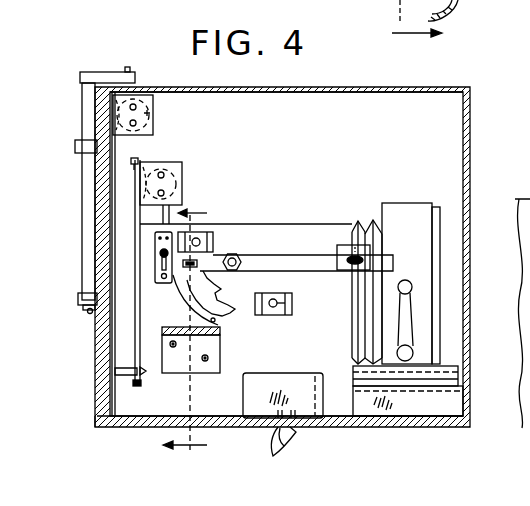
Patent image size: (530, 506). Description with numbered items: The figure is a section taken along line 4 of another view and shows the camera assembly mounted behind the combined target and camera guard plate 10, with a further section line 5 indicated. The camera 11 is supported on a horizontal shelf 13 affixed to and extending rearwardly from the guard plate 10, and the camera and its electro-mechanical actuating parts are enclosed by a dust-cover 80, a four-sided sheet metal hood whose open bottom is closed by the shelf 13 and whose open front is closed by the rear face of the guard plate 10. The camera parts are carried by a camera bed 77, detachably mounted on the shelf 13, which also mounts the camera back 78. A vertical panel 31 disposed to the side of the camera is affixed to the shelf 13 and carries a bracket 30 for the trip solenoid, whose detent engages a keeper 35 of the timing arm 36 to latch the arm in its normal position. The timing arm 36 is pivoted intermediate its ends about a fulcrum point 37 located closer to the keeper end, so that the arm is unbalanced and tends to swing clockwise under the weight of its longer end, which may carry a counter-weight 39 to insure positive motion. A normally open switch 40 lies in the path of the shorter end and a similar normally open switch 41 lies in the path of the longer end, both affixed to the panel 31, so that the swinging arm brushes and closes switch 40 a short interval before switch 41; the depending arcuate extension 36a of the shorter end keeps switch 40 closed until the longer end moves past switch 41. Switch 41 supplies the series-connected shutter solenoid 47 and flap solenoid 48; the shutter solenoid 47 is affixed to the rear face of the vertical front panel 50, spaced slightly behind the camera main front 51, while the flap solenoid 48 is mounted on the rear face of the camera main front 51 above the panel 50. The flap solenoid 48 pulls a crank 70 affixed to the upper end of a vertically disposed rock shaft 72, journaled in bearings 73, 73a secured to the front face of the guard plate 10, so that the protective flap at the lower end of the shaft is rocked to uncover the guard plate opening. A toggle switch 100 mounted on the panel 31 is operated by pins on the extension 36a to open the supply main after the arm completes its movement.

The section line 4— 4 is at (413, 23).
The section line 5— 5 is at (201, 328).
The combined target and camera guard plate 10 is at (98, 388).
The camera 11 is at (367, 213).
The horizontal shelf 13 is at (428, 421).
The bracket 30 is at (220, 335).
The vertical panel 31 is at (325, 240).
The keeper 35 is at (188, 268).
The timing arm 36 is at (286, 269).
The depending arcuate extension 36a is at (222, 310).
The fulcrum point 37 is at (238, 258).
The counter-weight 39 is at (346, 258).
The normally open switch 40 is at (203, 243).
The normally open switch 41 is at (291, 308).
The shutter solenoid 47 is at (182, 182).
The flap solenoid 48 is at (155, 110).
The vertical front panel 50 is at (135, 343).
The camera main front 51 is at (112, 333).
The crank 70 is at (135, 77).
The rock shaft 72 is at (86, 210).
The bearing 73 is at (80, 147).
The bearing 73a is at (60, 310).
The camera bed 77 is at (445, 396).
The camera back 78 is at (423, 303).
The dust-cover 80 is at (428, 85).
The toggle switch 100 is at (157, 238).